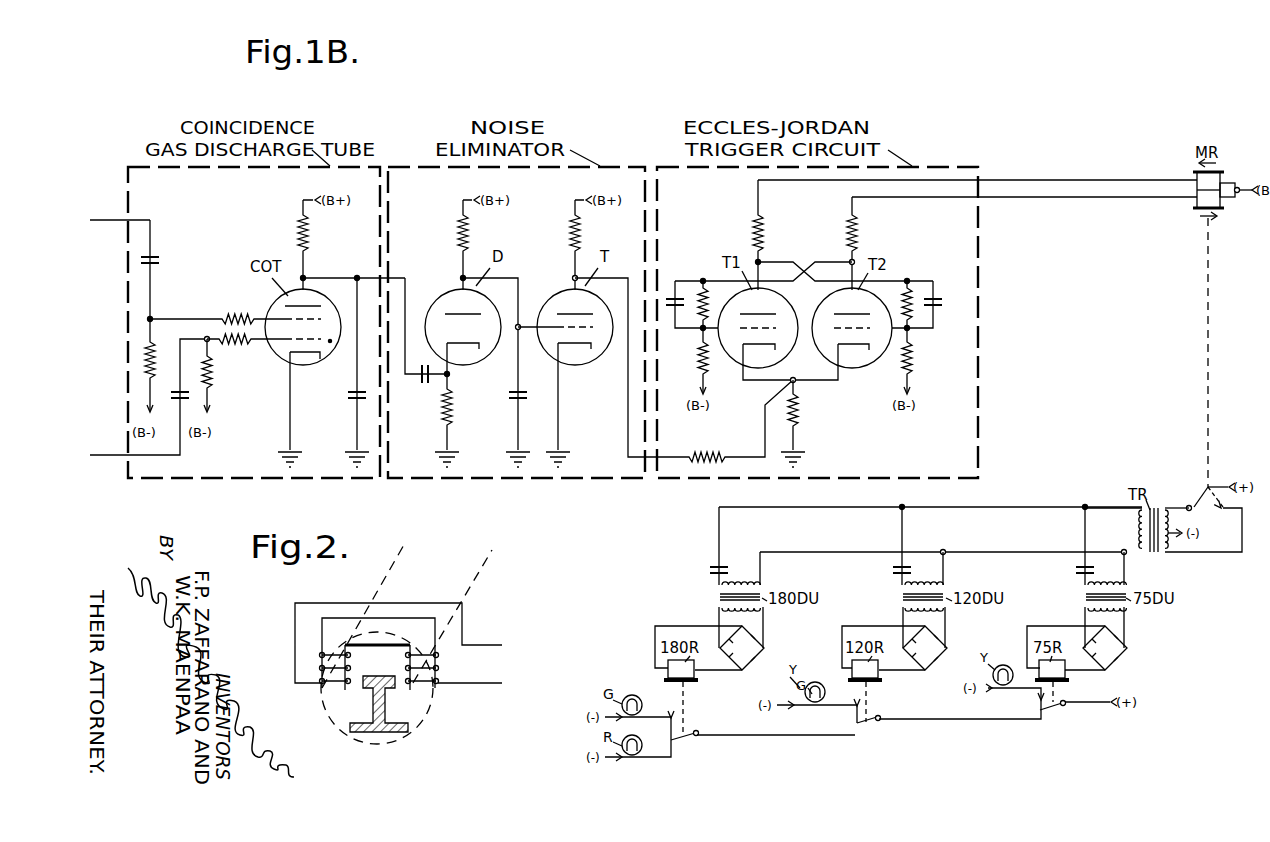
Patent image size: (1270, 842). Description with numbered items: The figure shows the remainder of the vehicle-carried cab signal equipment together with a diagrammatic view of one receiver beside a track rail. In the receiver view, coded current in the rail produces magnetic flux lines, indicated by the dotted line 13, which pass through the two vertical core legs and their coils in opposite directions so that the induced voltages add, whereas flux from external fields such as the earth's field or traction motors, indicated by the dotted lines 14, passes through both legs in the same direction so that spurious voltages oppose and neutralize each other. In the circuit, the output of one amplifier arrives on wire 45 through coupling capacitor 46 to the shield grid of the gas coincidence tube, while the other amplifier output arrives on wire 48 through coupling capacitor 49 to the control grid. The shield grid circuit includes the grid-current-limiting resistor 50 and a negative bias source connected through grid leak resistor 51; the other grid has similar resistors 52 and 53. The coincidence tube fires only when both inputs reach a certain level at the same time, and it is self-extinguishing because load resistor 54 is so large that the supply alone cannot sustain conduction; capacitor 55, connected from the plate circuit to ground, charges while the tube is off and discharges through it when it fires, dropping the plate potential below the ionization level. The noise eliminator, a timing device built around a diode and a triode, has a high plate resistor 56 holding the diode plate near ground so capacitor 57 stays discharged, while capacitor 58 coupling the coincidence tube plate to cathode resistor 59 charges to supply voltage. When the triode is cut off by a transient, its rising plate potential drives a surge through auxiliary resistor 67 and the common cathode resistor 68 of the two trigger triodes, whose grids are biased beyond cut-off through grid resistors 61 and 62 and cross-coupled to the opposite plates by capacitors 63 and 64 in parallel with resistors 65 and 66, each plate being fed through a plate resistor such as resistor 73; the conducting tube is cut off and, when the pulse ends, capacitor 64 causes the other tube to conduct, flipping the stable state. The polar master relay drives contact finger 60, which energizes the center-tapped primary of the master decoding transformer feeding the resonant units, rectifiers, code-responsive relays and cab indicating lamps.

In FIG. 1B, the wire 45 is at (96, 220).
In FIG. 1B, the coupling capacitor 46 is at (152, 262).
In FIG. 1B, the wire 48 is at (96, 455).
In FIG. 1B, the coupling capacitor 49 is at (183, 392).
In FIG. 1B, the grid-current-limiting resistor 50 is at (223, 318).
In FIG. 1B, the grid leak resistor 51 is at (153, 353).
In FIG. 1B, the resistor 52 is at (238, 344).
In FIG. 1B, the resistor 53 is at (212, 373).
In FIG. 1B, the load resistor 54 is at (308, 241).
In FIG. 1B, the capacitor 55 is at (350, 396).
In FIG. 1B, the plate resistor 56 is at (469, 240).
In FIG. 1B, the capacitor 57 is at (520, 398).
In FIG. 1B, the capacitor 58 is at (422, 382).
In FIG. 1B, the cathode resistor 59 is at (452, 412).
In FIG. 1B, the contact finger 60 is at (1203, 385).
In FIG. 1B, the grid resistor 61 is at (699, 366).
In FIG. 1B, the grid resistor 62 is at (911, 362).
In FIG. 1B, the capacitor 63 is at (674, 290).
In FIG. 1B, the capacitor 64 is at (936, 306).
In FIG. 1B, the resistor 65 is at (714, 304).
In FIG. 1B, the resistor 66 is at (895, 304).
In FIG. 1B, the auxiliary resistor 67 is at (698, 455).
In FIG. 1B, the common cathode resistor 68 is at (799, 410).
In FIG. 1B, the anode resistor 73 is at (762, 233).
In FIG. 2, the magnetic flux lines of rail current 13 is at (430, 713).
In FIG. 2, the dotted lines of external magnetic field flux 14 is at (481, 567).